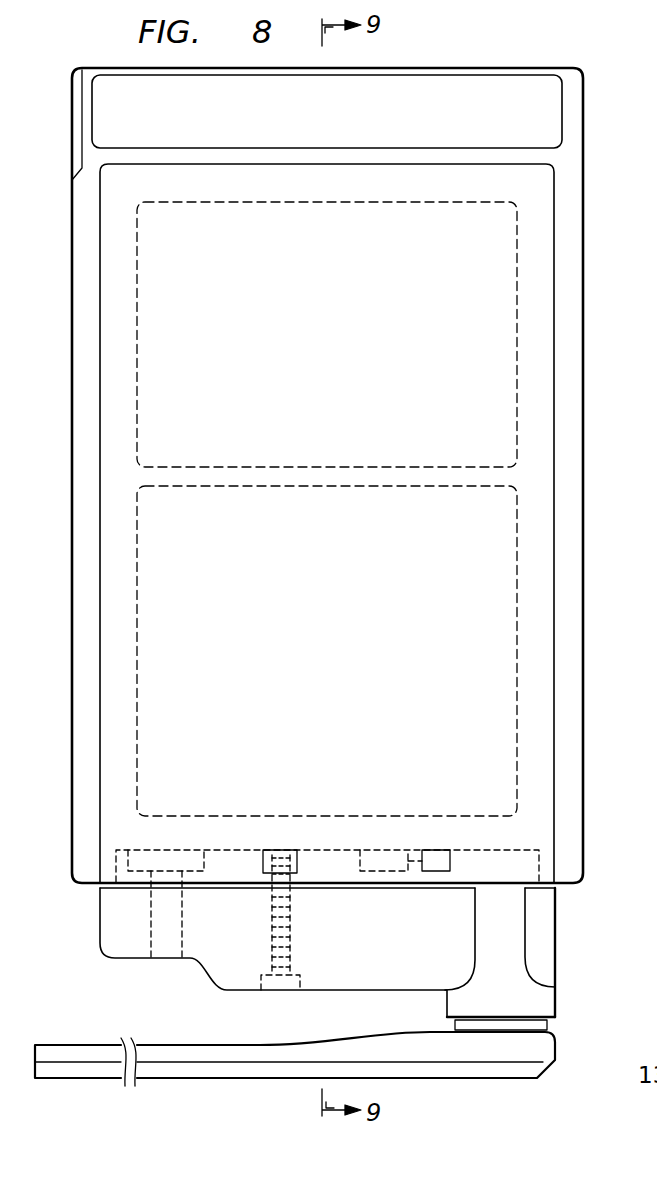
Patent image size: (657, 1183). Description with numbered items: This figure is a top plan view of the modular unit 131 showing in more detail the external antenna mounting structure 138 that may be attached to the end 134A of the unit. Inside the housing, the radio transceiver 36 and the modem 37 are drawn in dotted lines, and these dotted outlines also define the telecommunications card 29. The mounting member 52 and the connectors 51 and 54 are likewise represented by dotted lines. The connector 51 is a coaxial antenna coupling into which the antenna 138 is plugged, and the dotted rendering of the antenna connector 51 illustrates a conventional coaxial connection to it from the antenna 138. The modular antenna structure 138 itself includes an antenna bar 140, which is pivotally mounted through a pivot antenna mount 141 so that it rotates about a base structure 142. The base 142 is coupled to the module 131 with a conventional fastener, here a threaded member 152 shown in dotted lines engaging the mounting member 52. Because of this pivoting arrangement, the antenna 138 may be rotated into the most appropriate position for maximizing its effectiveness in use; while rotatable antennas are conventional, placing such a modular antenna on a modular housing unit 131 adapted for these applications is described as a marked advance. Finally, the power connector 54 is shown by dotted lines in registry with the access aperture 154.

The modular unit 131 is at (597, 391).
The telecommunications card 29 is at (389, 509).
The modem 37 is at (334, 330).
The radio transceiver 36 is at (336, 653).
The end 134A is at (477, 851).
The power connector 54 is at (204, 860).
The mounting member 52 is at (300, 858).
The threaded member 152 is at (290, 947).
The connector 51 is at (422, 852).
The access aperture 154 is at (183, 913).
The base structure 142 is at (250, 993).
The external antenna mounting structure 138 is at (580, 1018).
The pivot antenna mount 141 is at (450, 1030).
The antenna bar 140 is at (457, 1070).